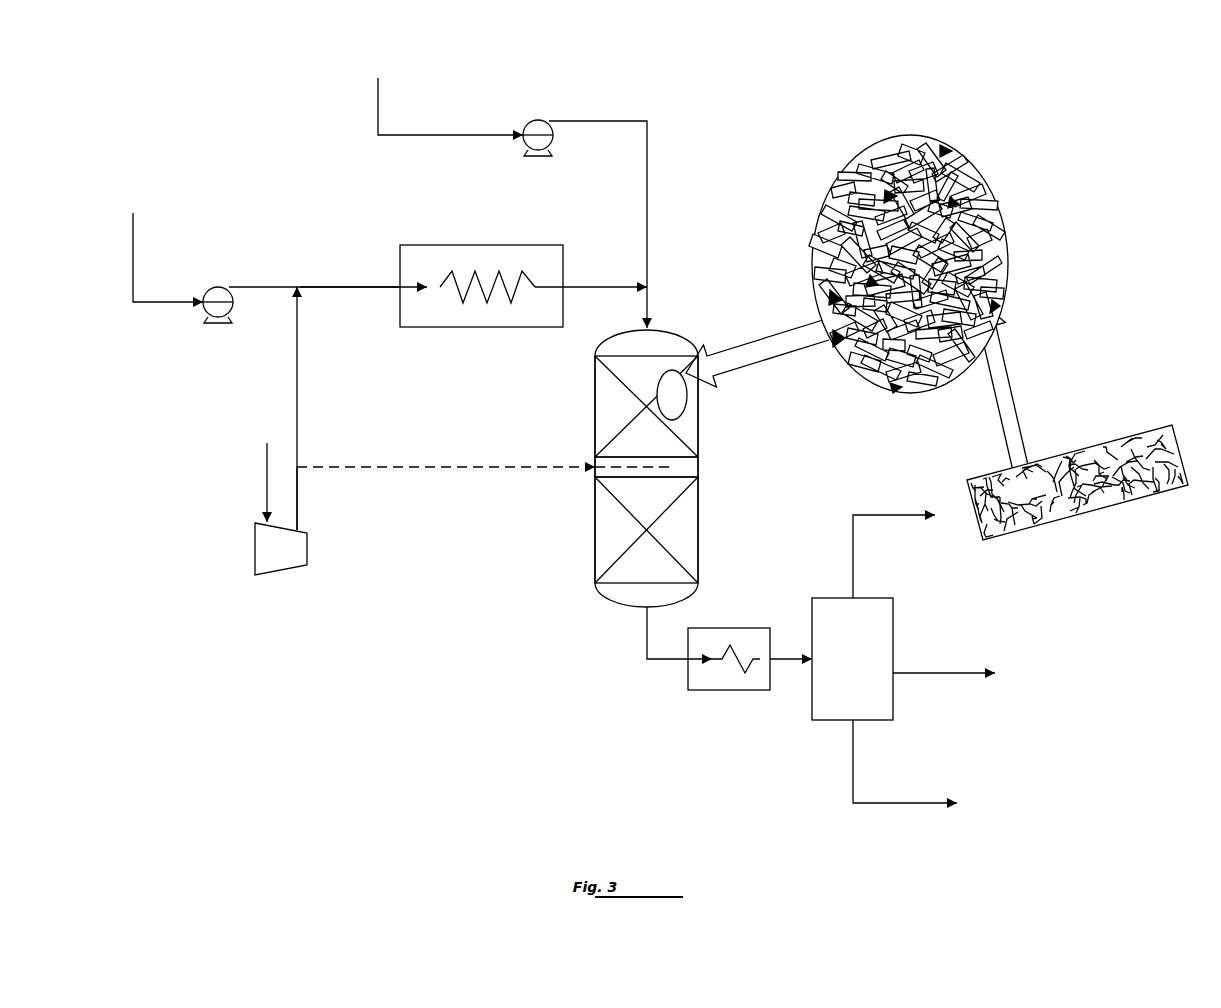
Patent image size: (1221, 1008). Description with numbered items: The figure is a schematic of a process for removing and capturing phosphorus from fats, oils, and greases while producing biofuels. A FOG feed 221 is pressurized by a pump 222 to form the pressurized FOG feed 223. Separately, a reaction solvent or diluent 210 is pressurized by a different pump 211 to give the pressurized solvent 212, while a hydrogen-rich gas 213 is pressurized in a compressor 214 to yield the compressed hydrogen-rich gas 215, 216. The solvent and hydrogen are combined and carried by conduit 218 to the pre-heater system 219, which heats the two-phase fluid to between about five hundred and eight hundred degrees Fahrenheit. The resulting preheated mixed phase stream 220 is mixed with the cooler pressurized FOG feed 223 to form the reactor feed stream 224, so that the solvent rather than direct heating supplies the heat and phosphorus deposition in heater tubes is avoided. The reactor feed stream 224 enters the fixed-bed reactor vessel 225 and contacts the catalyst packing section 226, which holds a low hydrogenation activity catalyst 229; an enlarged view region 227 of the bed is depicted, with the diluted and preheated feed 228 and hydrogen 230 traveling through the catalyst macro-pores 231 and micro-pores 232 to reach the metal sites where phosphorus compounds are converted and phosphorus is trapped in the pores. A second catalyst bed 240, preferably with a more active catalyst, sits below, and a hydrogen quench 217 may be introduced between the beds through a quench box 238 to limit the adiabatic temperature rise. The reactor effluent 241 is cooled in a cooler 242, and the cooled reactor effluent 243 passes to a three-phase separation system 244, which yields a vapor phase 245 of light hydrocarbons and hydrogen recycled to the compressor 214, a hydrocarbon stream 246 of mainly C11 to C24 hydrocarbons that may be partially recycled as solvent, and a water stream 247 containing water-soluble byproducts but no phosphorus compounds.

The reaction solvent or diluent 210 is at (133, 255).
The pump 211 is at (210, 322).
The pressurized solvent 212 is at (255, 287).
The hydrogen-rich gas 213 is at (267, 482).
The compressor 214 is at (255, 550).
The compressed hydrogen-rich gas 215 is at (297, 493).
The compressed hydrogen-rich gas 216 is at (297, 348).
The hydrogen quench 217 is at (445, 470).
The conduit 218 is at (382, 285).
The pre-heater system 219 is at (482, 245).
The preheated mixed phase stream 220 is at (627, 285).
The feed 221 is at (378, 98).
The pump 222 is at (538, 119).
The pressurized FOG feed 223 is at (650, 150).
The reactor feed stream 224 is at (650, 305).
The fixed-bed reactor vessel 225 is at (598, 345).
The catalyst packing section 226 is at (615, 400).
The catalyst detail region 227 is at (873, 387).
The diluted and preheated feed 228 is at (953, 167).
The low hydrogenation activity catalyst 229 is at (970, 497).
The hydrogen 230 is at (942, 226).
The macro-pores 231 is at (1033, 528).
The micro-pores 232 is at (1077, 504).
The quench box 238 is at (620, 472).
The catalyst bed 240 is at (602, 525).
The reactor effluent 241 is at (647, 638).
The cooler 242 is at (688, 675).
The cooled reactor effluent 243 is at (790, 655).
The three-phase separation system 244 is at (812, 700).
The vapor phase 245 is at (853, 568).
The hydrocarbon stream 246 is at (957, 675).
The water stream 247 is at (853, 745).